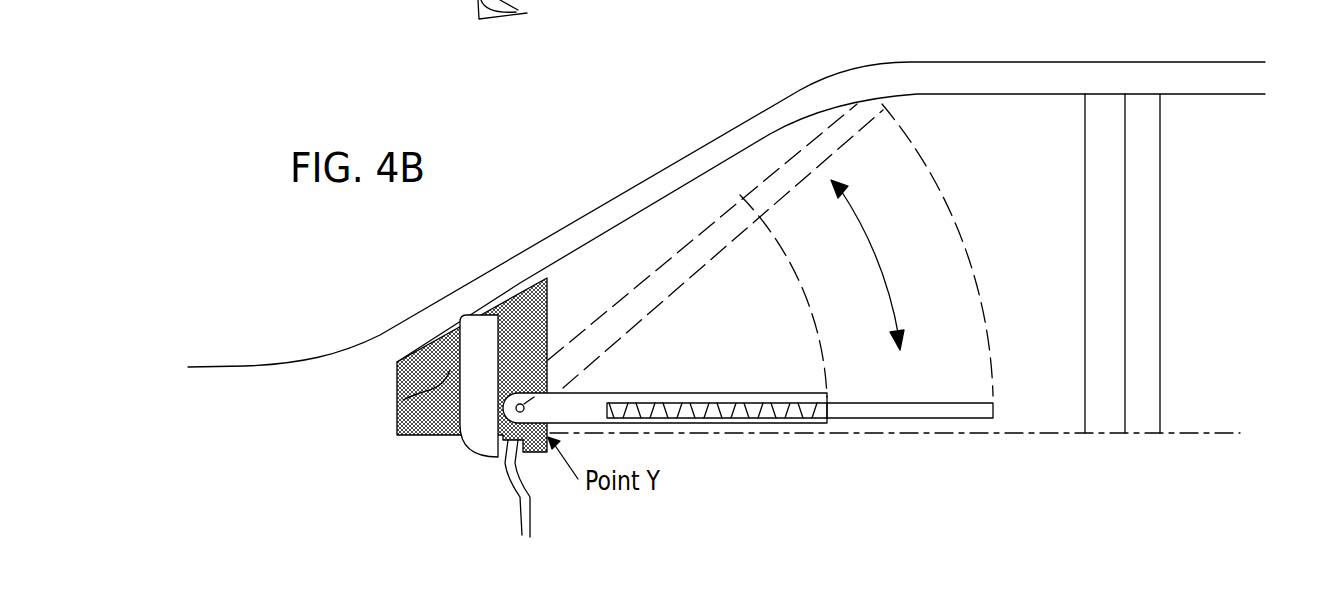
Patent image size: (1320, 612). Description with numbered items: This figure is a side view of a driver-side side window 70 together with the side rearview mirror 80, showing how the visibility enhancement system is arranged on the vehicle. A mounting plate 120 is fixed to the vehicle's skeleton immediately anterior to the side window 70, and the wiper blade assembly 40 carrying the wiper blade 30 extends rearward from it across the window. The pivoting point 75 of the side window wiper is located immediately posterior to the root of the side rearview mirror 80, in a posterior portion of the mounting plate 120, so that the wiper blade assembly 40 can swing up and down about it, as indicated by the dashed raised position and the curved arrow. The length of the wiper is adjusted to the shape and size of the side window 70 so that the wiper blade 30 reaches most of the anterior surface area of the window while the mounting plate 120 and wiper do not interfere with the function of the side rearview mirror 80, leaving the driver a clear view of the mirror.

The wiper blade 30 is at (958, 403).
The wiper blade assembly 40 is at (590, 403).
The driver-side side window 70 is at (1000, 143).
The pivoting point 75 is at (528, 450).
The side rearview mirror 80 is at (480, 353).
The mounting plate 120 is at (397, 390).